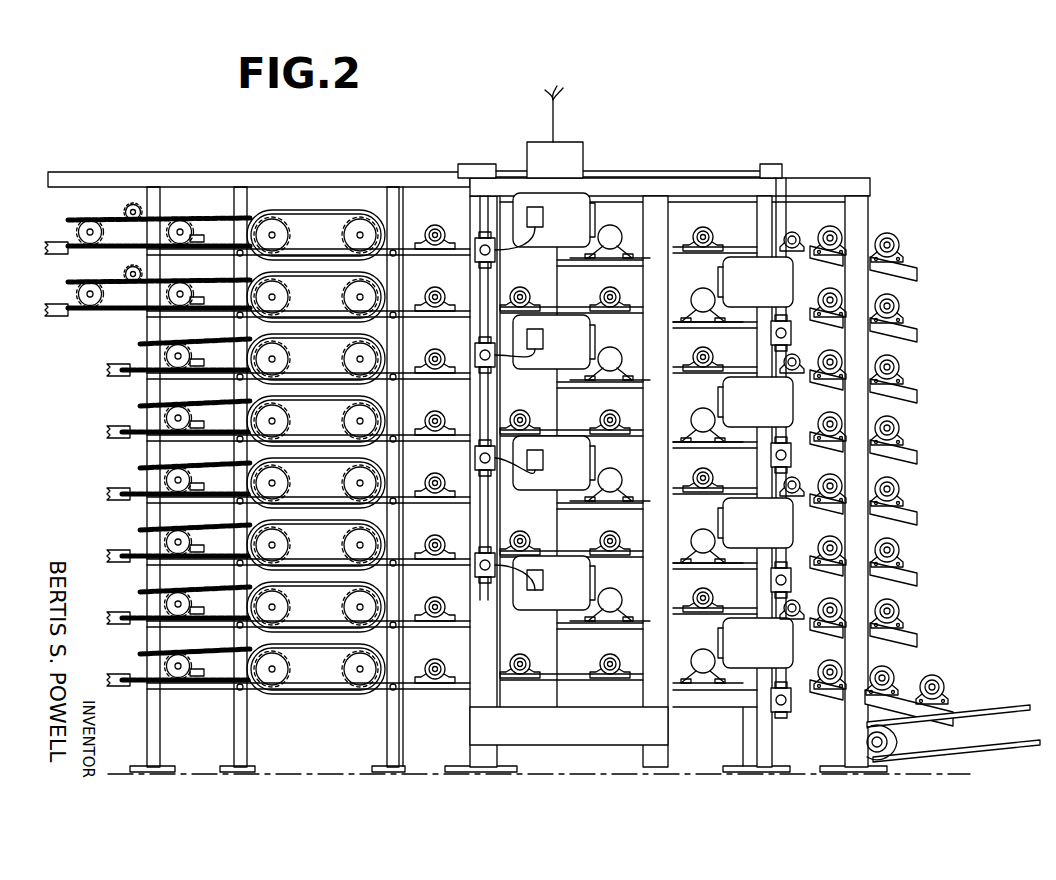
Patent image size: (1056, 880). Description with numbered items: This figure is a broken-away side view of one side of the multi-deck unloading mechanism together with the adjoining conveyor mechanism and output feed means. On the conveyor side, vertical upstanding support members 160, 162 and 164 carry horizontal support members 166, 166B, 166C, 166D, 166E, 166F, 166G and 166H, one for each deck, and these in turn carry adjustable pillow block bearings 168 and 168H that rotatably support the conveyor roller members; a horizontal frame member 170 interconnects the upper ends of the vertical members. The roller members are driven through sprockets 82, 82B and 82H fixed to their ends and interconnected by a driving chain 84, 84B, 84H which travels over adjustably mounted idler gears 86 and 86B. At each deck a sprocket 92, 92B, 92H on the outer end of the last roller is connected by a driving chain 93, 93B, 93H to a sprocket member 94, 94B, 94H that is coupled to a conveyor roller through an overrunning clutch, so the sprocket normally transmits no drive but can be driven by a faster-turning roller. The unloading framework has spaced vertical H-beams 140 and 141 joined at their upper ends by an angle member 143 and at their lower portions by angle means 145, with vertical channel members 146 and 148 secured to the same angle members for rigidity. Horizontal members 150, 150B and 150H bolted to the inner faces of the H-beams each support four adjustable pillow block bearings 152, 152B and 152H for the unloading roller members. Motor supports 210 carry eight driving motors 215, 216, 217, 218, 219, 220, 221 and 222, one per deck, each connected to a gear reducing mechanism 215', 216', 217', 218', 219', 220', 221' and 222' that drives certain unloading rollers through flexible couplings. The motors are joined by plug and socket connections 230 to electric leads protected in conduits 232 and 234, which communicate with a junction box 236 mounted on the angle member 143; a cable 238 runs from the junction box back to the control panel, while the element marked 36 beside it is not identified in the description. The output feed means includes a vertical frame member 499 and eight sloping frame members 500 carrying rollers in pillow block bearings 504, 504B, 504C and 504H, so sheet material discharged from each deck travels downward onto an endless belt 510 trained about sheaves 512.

The electrical lead splice 36 is at (550, 84).
The sprocket 82 is at (185, 219).
The sprocket 82B is at (168, 306).
The sprocket 82H is at (172, 680).
The driving chain 84 is at (215, 216).
The driving chain 84B is at (120, 316).
The driving chain 84H is at (217, 690).
The idler gear 86 is at (135, 203).
The idler gear 86B is at (124, 274).
The sprocket 92 is at (272, 220).
The sprocket 92B is at (288, 290).
The sprocket 92H is at (268, 688).
The driving chain 93 is at (311, 212).
The driving chain 93B is at (330, 281).
The driving chain 93H is at (315, 695).
The sprocket member 94 is at (360, 220).
The sprocket member 94B is at (382, 285).
The sprocket member 94H is at (358, 688).
The H-beam 140 is at (468, 214).
The H-beam 141 is at (775, 212).
The angle member 143 is at (695, 200).
The angle means 145 is at (543, 735).
The channel member 146 is at (548, 278).
The channel member 148 is at (679, 202).
The horizontal angle member 150 is at (663, 481).
The horizontal angle member 150B is at (618, 291).
The horizontal angle member 150H is at (425, 692).
The pillow block bearing 152 is at (705, 228).
The pillow block bearing 152B is at (436, 293).
The pillow block bearing 152H is at (432, 660).
The vertical support member 160 is at (403, 205).
The vertical support member 162 is at (250, 188).
The vertical support member 164 is at (162, 192).
The horizontal support member 166 is at (50, 244).
The horizontal support member 166B is at (50, 306).
The horizontal support member 166C is at (112, 371).
The horizontal support member 166D is at (108, 431).
The horizontal support member 166E is at (108, 493).
The horizontal support member 166F is at (108, 555).
The horizontal support member 166G is at (109, 617).
The horizontal support member 166H is at (110, 677).
The pillow block bearing 168 is at (202, 298).
The pillow block bearing 168H is at (195, 678).
The horizontal frame member 170 is at (386, 186).
The motor support 210 is at (695, 708).
The driving motor 215 is at (573, 183).
The gear reducing mechanism 215' is at (615, 205).
The driving motor 216 is at (715, 264).
The gear reducing mechanism 216' is at (755, 282).
The driving motor 217 is at (549, 361).
The gear reducing mechanism 217' is at (599, 354).
The driving motor 218 is at (718, 391).
The gear reducing mechanism 218' is at (755, 402).
The driving motor 219 is at (560, 439).
The gear reducing mechanism 219' is at (596, 485).
The driving motor 220 is at (712, 507).
The gear reducing mechanism 220' is at (755, 523).
The driving motor 221 is at (559, 564).
The gear reducing mechanism 221' is at (595, 608).
The driving motor 222 is at (711, 630).
The gear reducing mechanism 222' is at (755, 645).
The plug and socket connection 230 is at (786, 704).
The conduit 232 is at (475, 166).
The conduit 234 is at (787, 186).
The junction box 236 is at (565, 142).
The cable 238 is at (550, 102).
The vertical frame member 499 is at (862, 594).
The sloping frame member 500 is at (930, 655).
The pillow block bearing 504 is at (832, 252).
The pillow block bearing 504B is at (898, 310).
The pillow block bearing 504C is at (900, 370).
The pillow block bearing 504H is at (875, 692).
The endless belt 510 is at (993, 708).
The sheave 512 is at (887, 757).